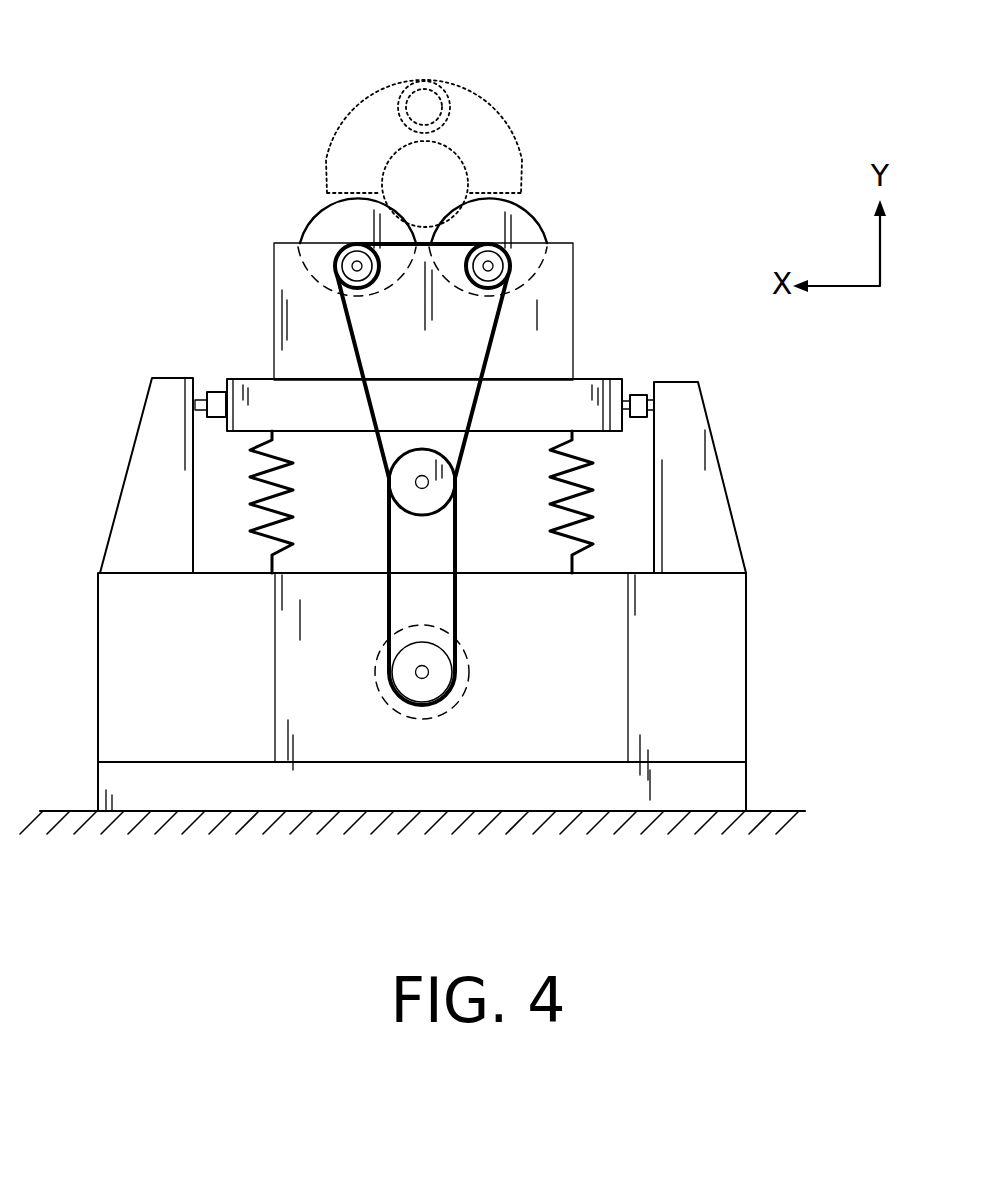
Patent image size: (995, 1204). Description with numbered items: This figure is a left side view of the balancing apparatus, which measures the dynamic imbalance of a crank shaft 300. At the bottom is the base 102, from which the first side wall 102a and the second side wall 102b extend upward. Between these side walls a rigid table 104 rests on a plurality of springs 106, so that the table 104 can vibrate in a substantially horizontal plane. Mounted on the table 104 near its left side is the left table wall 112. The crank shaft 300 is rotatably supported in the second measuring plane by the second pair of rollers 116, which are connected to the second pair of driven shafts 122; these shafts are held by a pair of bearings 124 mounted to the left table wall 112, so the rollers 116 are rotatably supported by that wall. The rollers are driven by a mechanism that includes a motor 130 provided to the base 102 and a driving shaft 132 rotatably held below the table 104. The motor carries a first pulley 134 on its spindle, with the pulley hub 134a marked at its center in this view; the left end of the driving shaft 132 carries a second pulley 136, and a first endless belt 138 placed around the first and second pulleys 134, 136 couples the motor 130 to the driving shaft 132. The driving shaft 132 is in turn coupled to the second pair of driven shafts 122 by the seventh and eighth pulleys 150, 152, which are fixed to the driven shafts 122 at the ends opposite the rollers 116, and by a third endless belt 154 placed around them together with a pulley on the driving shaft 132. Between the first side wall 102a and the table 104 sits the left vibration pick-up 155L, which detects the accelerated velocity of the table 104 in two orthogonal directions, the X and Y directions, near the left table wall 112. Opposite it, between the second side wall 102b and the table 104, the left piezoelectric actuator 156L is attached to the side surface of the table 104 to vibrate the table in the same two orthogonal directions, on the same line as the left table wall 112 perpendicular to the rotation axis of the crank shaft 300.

The crank shaft 300 is at (470, 66).
The second pair of rollers 116 is at (325, 212).
The second pair of driven shafts 122 is at (366, 288).
The bearings 124 is at (327, 250).
The left table wall 112 is at (558, 308).
The eighth pulley 152 is at (349, 289).
The seventh pulley 150 is at (482, 286).
The table 104 is at (608, 392).
The left piezoelectric actuator 156L is at (217, 396).
The left vibration pick-up 155L is at (640, 394).
The second side wall 102b is at (138, 493).
The first side wall 102a is at (703, 498).
The base 102 is at (727, 704).
The springs 106 is at (262, 523).
The third endless belt 154 is at (378, 447).
The second pulley 136 is at (386, 499).
The first endless belt 138 is at (458, 618).
The driving shaft 132 is at (429, 481).
The first pulley 134 is at (402, 684).
The drive pulley shaft 134a is at (414, 668).
The motor 130 is at (468, 683).